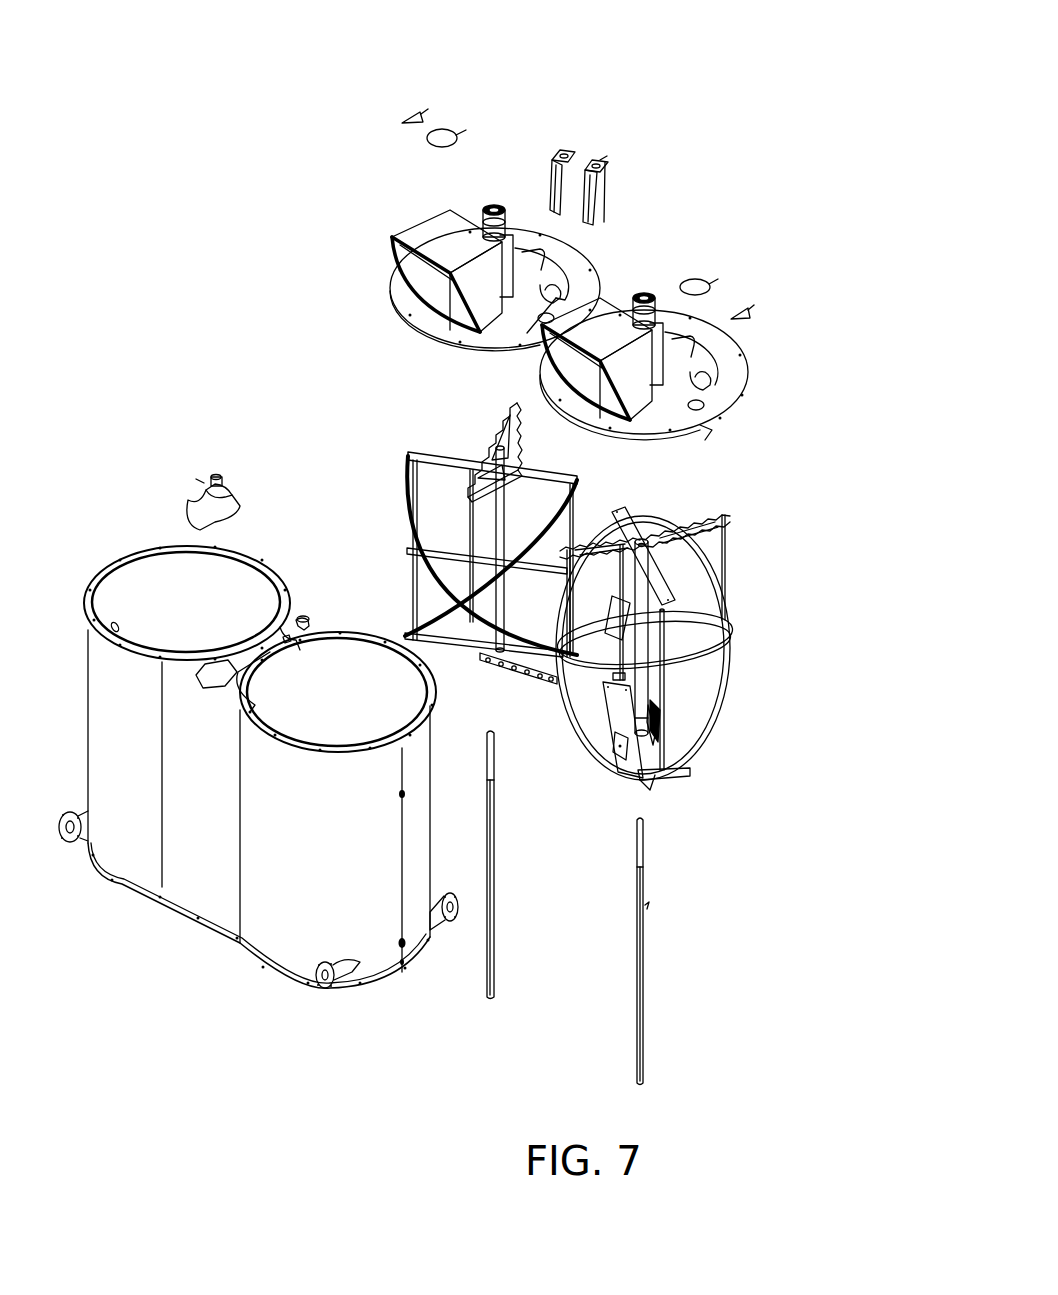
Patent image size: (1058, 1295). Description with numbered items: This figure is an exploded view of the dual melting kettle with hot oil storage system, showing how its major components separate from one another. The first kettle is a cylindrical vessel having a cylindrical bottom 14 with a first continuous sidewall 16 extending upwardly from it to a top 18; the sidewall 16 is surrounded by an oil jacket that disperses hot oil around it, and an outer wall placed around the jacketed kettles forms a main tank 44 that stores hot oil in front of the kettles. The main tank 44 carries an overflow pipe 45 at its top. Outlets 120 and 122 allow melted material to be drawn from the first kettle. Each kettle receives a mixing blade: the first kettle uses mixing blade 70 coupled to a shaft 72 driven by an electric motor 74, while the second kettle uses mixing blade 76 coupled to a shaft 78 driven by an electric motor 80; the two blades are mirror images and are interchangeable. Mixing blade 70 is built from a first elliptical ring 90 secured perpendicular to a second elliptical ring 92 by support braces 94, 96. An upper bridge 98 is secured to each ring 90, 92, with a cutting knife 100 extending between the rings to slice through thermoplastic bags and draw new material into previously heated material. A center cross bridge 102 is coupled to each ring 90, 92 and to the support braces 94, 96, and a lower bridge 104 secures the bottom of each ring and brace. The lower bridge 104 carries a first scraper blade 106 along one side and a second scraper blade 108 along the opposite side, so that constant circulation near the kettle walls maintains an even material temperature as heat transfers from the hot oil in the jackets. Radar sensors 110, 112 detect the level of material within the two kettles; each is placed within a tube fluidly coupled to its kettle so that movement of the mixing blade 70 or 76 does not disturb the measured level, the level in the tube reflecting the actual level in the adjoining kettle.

The cylindrical bottom 14 is at (265, 813).
The first continuous sidewall 16 is at (343, 671).
The top 18 is at (290, 747).
The main tank 44 is at (194, 857).
The overflow pipe 45 is at (190, 497).
The mixing blade 70 is at (723, 662).
The shaft 72 is at (655, 1000).
The electric motor 74 is at (617, 224).
The mixing blade 76 is at (400, 478).
The shaft 78 is at (494, 888).
The electric motor 80 is at (493, 203).
The first elliptical ring 90 is at (722, 615).
The second elliptical ring 92 is at (727, 712).
The support brace 94 is at (657, 722).
The support brace 96 is at (622, 588).
The upper bridge 98 is at (632, 528).
The cutting knife 100 is at (710, 530).
The center cross bridge 102 is at (672, 640).
The lower bridge 104 is at (648, 750).
The first scraper blade 106 is at (657, 782).
The second scraper blade 108 is at (654, 716).
The radar sensor 110 is at (560, 147).
The radar sensor 112 is at (610, 167).
The outlet 120 is at (345, 972).
The outlet 122 is at (443, 930).